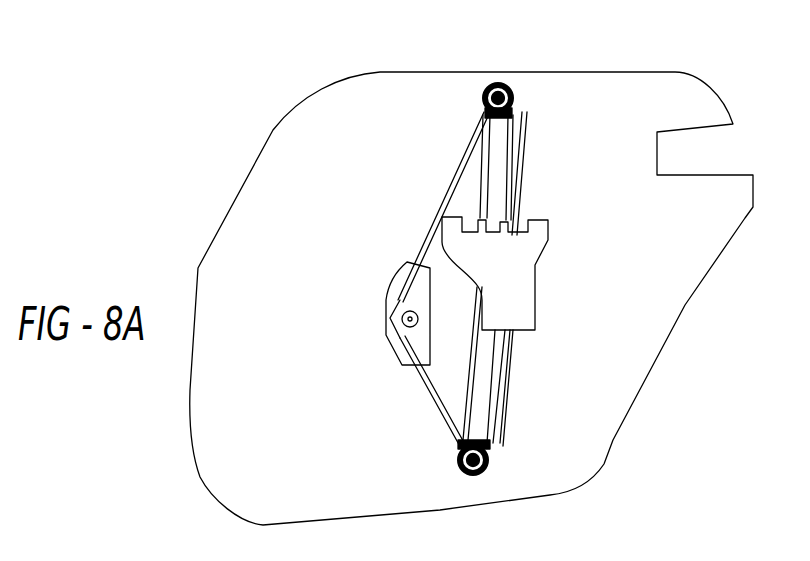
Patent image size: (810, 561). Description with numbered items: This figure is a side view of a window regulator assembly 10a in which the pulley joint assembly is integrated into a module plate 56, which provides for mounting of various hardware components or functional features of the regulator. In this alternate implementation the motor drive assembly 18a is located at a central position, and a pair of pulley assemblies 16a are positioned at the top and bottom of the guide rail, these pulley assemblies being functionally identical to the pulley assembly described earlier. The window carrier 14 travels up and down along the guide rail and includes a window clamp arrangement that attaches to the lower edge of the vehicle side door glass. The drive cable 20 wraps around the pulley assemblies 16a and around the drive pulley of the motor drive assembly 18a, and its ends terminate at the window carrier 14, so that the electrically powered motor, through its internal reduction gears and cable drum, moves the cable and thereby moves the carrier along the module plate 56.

The window regulator assembly 10a is at (615, 57).
The window carrier 14 is at (510, 287).
The pulley assemblies 16a is at (486, 84).
The motor drive assembly 18a is at (400, 275).
The drive cable 20 is at (428, 400).
The module plate 56 is at (595, 383).